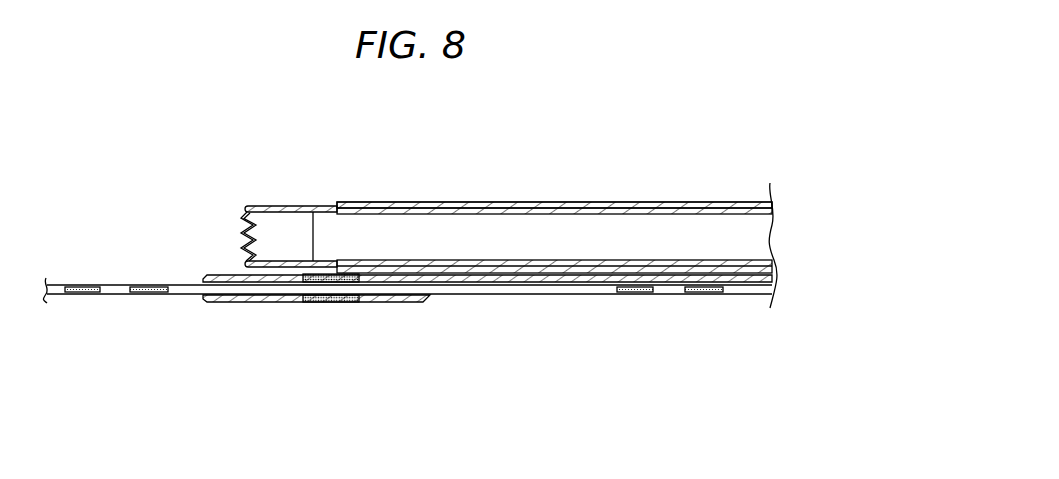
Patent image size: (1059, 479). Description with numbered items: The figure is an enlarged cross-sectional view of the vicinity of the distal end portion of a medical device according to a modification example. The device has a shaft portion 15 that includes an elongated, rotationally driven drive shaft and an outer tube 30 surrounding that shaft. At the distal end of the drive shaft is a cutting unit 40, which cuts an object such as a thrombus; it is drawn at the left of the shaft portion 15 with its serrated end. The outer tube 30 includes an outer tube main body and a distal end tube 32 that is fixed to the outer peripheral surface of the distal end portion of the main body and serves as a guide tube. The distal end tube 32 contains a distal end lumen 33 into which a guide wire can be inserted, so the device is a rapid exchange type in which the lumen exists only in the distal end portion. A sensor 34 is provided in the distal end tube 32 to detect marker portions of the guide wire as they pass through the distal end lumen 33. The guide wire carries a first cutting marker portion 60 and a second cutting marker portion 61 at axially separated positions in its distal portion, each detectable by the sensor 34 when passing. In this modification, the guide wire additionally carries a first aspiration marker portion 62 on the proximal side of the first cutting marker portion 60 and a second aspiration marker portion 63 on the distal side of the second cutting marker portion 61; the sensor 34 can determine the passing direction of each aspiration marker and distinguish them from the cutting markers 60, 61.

The shaft portion 15 is at (703, 203).
The outer tube 30 is at (655, 203).
The cutting unit 40 is at (278, 207).
The distal end tube 32 is at (263, 303).
The distal end lumen 33 is at (394, 302).
The sensor 34 is at (333, 302).
The first cutting marker portion 60 is at (645, 296).
The second cutting marker portion 61 is at (155, 296).
The first aspiration marker portion 62 is at (703, 296).
The second aspiration marker portion 63 is at (77, 296).